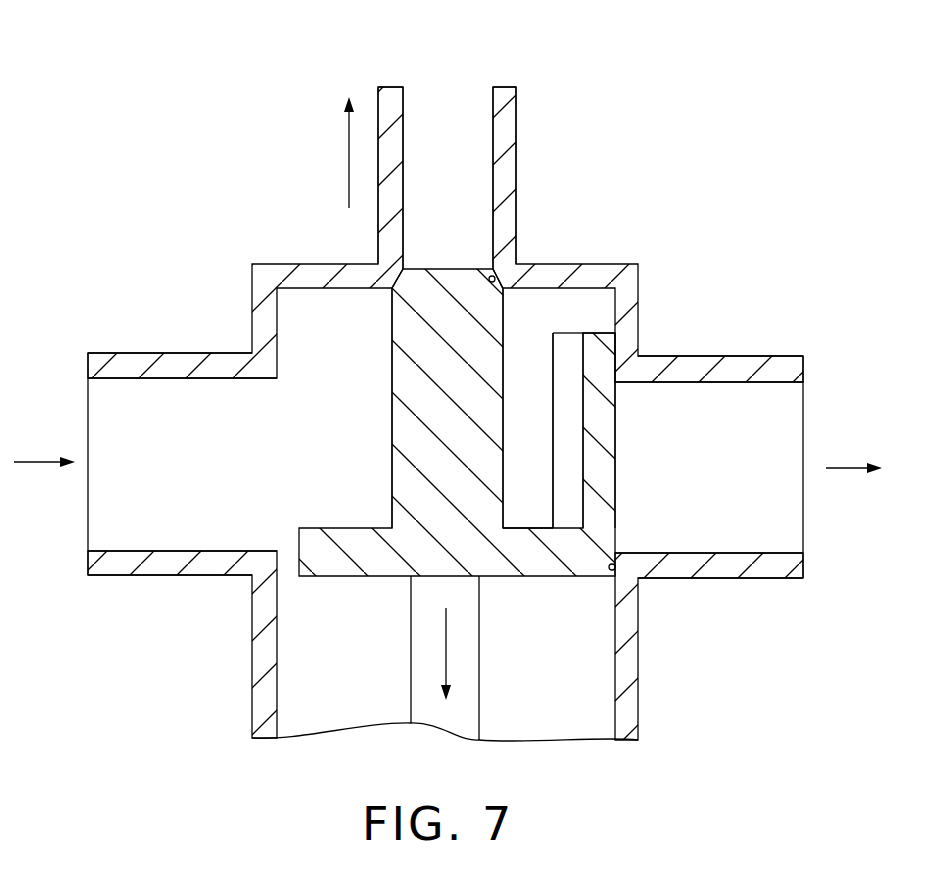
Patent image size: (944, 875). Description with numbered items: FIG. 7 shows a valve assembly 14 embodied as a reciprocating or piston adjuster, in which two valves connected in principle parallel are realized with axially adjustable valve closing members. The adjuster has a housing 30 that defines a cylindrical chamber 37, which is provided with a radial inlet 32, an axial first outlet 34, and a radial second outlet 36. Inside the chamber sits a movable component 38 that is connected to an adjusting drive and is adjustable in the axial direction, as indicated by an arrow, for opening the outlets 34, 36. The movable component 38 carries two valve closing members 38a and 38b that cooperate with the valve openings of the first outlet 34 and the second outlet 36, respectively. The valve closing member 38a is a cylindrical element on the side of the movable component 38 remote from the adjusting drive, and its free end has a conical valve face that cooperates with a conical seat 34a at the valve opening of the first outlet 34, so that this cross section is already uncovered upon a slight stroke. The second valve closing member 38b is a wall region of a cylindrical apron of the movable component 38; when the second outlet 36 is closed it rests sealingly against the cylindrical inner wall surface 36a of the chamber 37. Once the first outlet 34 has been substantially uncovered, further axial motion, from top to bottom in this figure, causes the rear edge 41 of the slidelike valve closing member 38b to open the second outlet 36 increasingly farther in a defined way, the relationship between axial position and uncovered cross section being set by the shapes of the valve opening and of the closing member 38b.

The valve assembly 14 is at (163, 291).
The housing 30 is at (652, 640).
The radial inlet 32 is at (112, 551).
The axial first outlet 34 is at (492, 106).
The conical seat 34a is at (496, 272).
The radial second outlet 36 is at (792, 551).
The cylindrical inner wall surface 36a is at (620, 566).
The cylindrical chamber 37 is at (562, 306).
The movable component 38 is at (337, 577).
The first valve closing member 38a is at (392, 369).
The second valve closing member 38b is at (615, 437).
The rear edge 41 is at (602, 332).